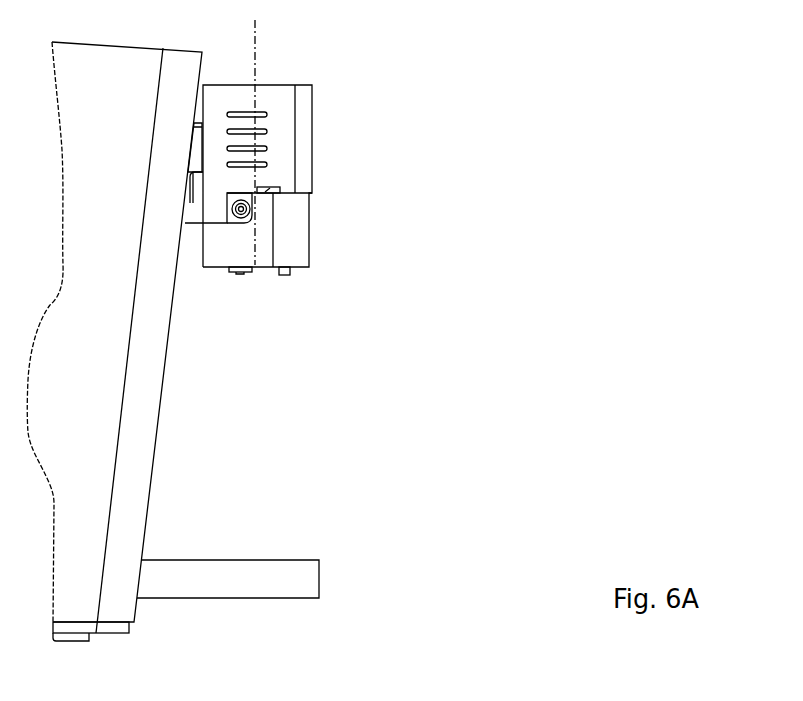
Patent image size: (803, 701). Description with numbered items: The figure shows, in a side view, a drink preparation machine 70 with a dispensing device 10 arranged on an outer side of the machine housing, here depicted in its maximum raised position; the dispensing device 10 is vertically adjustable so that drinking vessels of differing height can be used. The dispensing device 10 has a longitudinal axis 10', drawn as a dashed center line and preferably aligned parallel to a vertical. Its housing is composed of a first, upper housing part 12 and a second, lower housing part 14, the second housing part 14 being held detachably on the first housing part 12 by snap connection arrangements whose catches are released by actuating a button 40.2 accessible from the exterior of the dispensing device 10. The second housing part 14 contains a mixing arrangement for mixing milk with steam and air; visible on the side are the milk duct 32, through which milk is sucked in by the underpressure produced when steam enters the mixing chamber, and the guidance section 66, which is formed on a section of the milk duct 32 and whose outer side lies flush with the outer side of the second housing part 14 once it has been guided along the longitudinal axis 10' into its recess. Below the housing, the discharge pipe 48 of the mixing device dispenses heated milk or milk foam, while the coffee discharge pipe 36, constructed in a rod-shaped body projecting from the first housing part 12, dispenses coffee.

The drink preparation machine 70 is at (538, 73).
The longitudinal axis 10' is at (274, 138).
The dispensing device 10 is at (302, 184).
The first housing part 12 is at (305, 123).
The second housing part 14 is at (292, 258).
The guidance section 66 is at (250, 200).
The milk duct 32 is at (252, 212).
The button 40.2 is at (273, 188).
The discharge pipe 48 is at (240, 274).
The coffee discharge pipe 36 is at (285, 275).